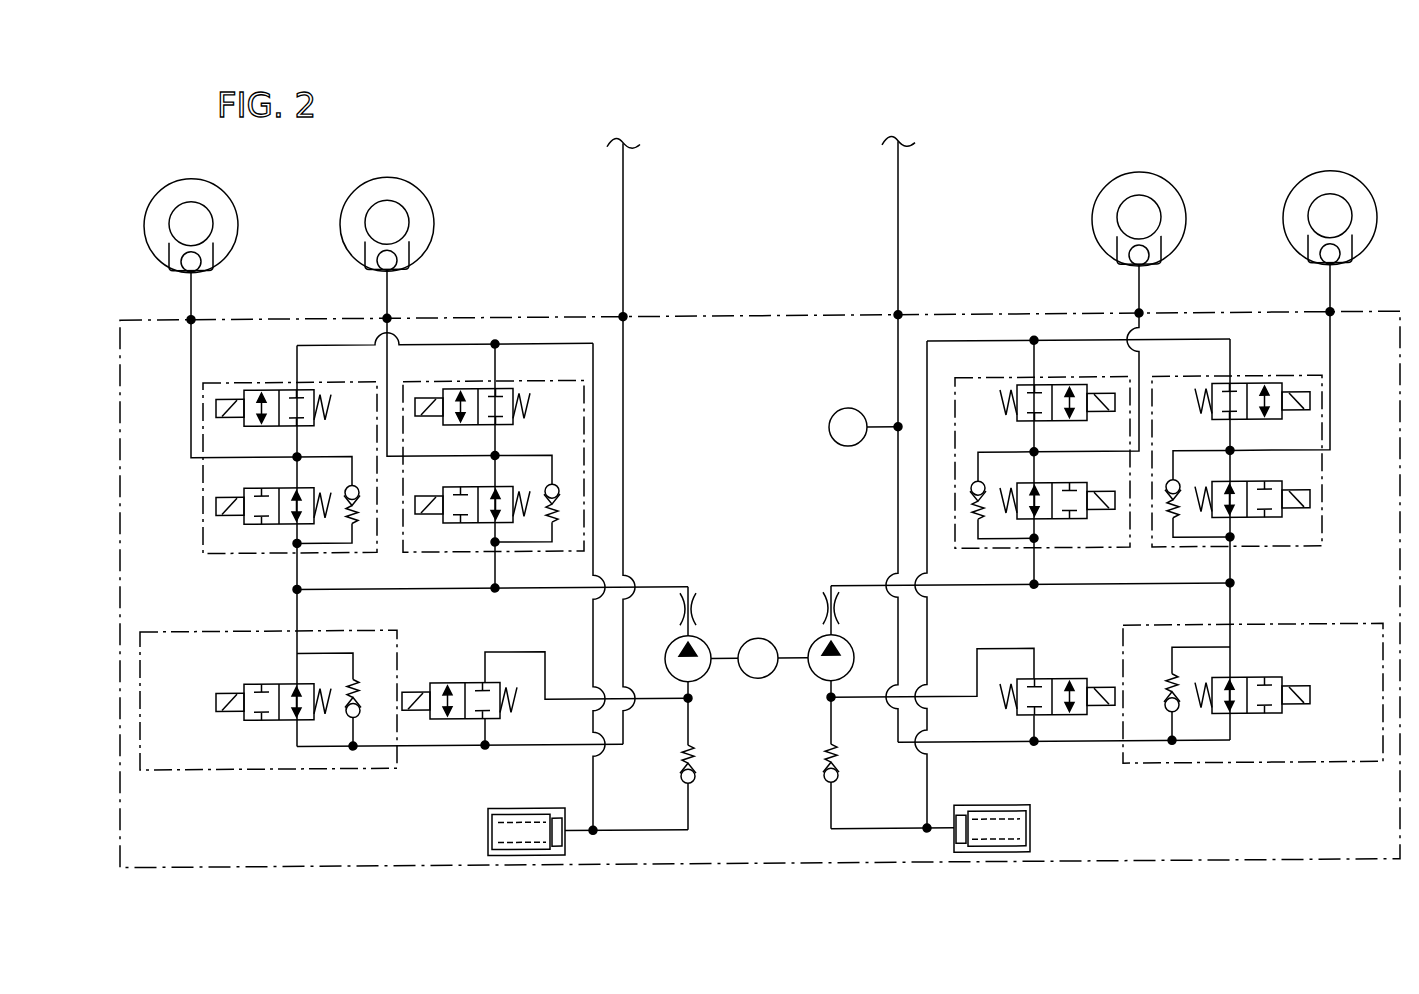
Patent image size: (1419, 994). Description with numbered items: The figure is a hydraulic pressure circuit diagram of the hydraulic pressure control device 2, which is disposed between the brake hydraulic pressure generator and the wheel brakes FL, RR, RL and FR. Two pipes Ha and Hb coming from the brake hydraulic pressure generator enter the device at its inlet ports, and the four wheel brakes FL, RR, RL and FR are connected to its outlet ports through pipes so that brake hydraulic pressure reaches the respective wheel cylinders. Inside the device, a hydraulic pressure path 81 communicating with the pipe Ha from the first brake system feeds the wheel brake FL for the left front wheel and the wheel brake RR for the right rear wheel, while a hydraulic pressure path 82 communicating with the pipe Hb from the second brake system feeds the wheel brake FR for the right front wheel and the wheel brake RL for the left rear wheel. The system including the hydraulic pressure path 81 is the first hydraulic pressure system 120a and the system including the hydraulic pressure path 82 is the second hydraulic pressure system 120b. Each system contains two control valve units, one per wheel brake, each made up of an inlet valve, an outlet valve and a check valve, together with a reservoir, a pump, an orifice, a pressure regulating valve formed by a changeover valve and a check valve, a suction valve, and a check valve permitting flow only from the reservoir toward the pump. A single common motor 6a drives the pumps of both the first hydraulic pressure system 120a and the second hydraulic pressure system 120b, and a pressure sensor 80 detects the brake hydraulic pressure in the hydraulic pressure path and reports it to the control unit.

The hydraulic pressure control device 2 is at (801, 298).
The motor 6a is at (758, 643).
The pressure sensor 80 is at (829, 433).
The hydraulic pressure path 81 is at (623, 380).
The hydraulic pressure path 82 is at (898, 380).
The first hydraulic pressure system 120a is at (517, 338).
The second hydraulic pressure system 120b is at (1003, 335).
The pipe Ha is at (623, 222).
The pipe Hb is at (898, 222).
The wheel brake FL is at (191, 176).
The wheel brake RR is at (387, 176).
The wheel brake RL is at (1139, 176).
The wheel brake FR is at (1330, 176).